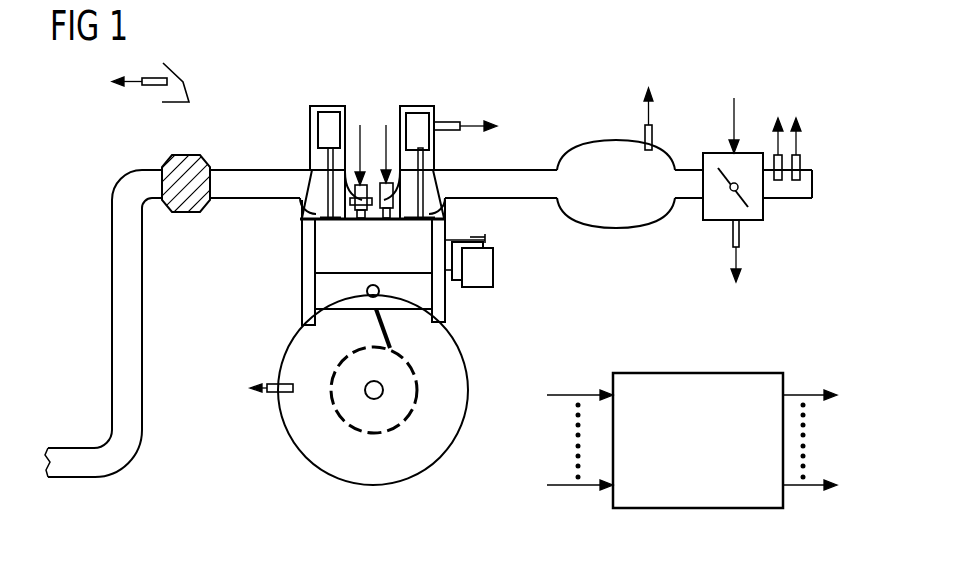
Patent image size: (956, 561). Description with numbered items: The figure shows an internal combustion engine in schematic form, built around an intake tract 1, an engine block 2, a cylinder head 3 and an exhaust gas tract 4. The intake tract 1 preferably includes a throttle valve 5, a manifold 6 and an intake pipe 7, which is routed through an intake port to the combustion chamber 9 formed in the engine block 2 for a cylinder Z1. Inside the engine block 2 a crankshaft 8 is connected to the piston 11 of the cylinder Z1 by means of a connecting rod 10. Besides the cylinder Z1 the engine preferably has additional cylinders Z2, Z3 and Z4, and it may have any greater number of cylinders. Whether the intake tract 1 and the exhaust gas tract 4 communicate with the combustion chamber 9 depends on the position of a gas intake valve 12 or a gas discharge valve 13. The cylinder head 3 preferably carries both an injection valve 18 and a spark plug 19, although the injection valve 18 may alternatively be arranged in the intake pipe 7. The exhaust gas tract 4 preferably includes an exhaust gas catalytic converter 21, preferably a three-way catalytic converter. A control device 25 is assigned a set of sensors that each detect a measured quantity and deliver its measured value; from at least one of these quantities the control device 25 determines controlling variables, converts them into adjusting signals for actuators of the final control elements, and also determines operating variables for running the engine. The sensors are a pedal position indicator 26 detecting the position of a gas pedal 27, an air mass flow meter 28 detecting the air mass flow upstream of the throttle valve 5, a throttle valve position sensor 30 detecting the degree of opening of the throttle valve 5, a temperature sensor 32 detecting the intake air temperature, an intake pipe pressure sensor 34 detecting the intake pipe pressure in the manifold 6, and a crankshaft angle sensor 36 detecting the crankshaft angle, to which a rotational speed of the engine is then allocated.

The intake tract 1 is at (654, 250).
The engine block 2 is at (253, 256).
The cylinder head 3 is at (418, 88).
The exhaust gas tract 4 is at (106, 180).
The throttle valve 5 is at (714, 156).
The manifold 6 is at (657, 214).
The intake pipe 7 is at (541, 170).
The crankshaft 8 is at (383, 388).
The combustion chamber 9 is at (316, 253).
The connecting rod 10 is at (381, 335).
The piston 11 is at (405, 300).
The gas intake valve 12 is at (422, 222).
The gas discharge valve 13 is at (316, 221).
The injection valve 18 is at (388, 222).
The spark plug 19 is at (358, 222).
The exhaust gas catalytic converter 21 is at (182, 212).
The control device 25 is at (720, 375).
The pedal position indicator 26 is at (147, 86).
The gas pedal 27 is at (183, 79).
The air mass flow meter 28 is at (773, 158).
The throttle valve position sensor 30 is at (742, 237).
The temperature sensor 32 is at (800, 162).
The intake pipe pressure sensor 34 is at (653, 126).
The crankshaft angle sensor 36 is at (275, 392).
The cylinder Z1 is at (438, 292).
The cylinder Z2 is at (480, 268).
The cylinder Z3 is at (484, 243).
The cylinder Z4 is at (486, 238).